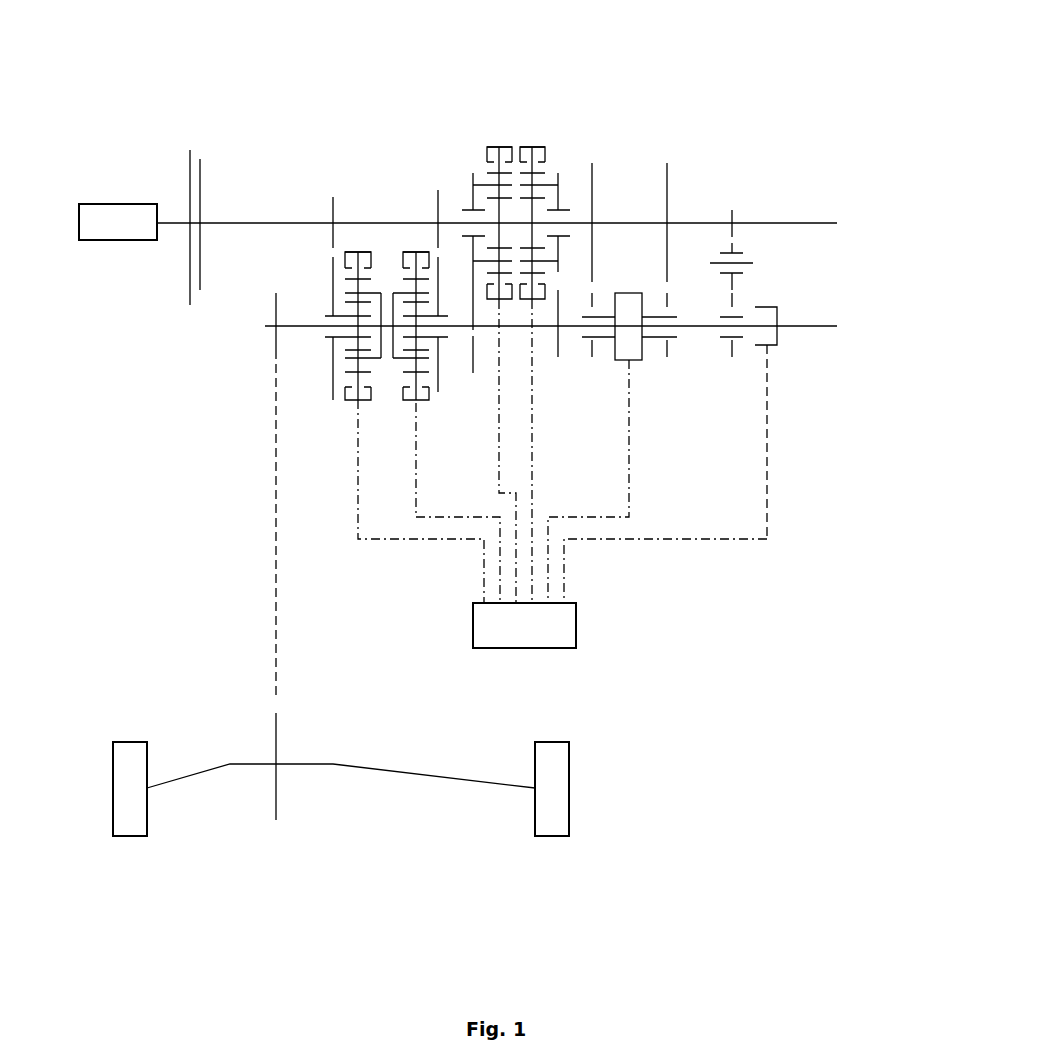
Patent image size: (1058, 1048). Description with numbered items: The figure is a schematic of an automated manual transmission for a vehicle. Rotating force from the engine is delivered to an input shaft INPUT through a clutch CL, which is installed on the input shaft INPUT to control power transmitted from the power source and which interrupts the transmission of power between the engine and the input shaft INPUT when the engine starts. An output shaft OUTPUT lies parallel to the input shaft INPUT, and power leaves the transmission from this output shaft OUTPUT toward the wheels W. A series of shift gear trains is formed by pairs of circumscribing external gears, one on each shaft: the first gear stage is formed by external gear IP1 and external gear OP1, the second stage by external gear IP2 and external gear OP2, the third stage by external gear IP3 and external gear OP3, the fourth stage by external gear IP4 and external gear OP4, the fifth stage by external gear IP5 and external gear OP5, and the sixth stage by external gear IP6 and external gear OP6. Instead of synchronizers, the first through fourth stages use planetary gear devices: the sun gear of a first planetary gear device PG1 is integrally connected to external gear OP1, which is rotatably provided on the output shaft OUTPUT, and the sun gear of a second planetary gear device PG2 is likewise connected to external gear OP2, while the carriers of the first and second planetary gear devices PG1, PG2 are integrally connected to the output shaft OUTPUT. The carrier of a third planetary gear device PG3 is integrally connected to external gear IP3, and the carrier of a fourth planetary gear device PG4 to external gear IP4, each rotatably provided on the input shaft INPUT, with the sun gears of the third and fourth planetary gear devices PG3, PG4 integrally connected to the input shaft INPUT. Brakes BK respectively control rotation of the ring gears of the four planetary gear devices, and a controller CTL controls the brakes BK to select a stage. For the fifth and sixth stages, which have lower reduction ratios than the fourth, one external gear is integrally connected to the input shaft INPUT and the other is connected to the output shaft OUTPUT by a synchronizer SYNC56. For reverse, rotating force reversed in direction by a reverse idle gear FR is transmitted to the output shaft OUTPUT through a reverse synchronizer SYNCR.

The element engine is at (118, 222).
The clutch CL is at (193, 213).
The input shaft INPUT is at (531, 223).
The output shaft OUTPUT is at (595, 326).
The external gear IP1 is at (332, 196).
The external gear IP2 is at (437, 187).
The external gear IP3 is at (471, 170).
The external gear IP4 is at (560, 171).
The external gear IP5 is at (594, 161).
The external gear IP6 is at (669, 161).
The external gear OP1 is at (331, 399).
The external gear OP2 is at (439, 394).
The external gear OP3 is at (473, 376).
The external gear OP4 is at (558, 360).
The external gear OP5 is at (593, 361).
The external gear OP6 is at (671, 363).
The first planetary gear device PG1 is at (350, 409).
The second planetary gear device PG2 is at (403, 408).
The third planetary gear device PG3 is at (499, 140).
The fourth planetary gear device PG4 is at (532, 140).
The brake BK is at (408, 250).
The reverse idle gear FR is at (734, 244).
The reverse synchronizer SYNCR is at (778, 341).
The synchronizer SYNC56 is at (641, 363).
The controller CTL is at (524, 625).
The wheel W is at (132, 834).